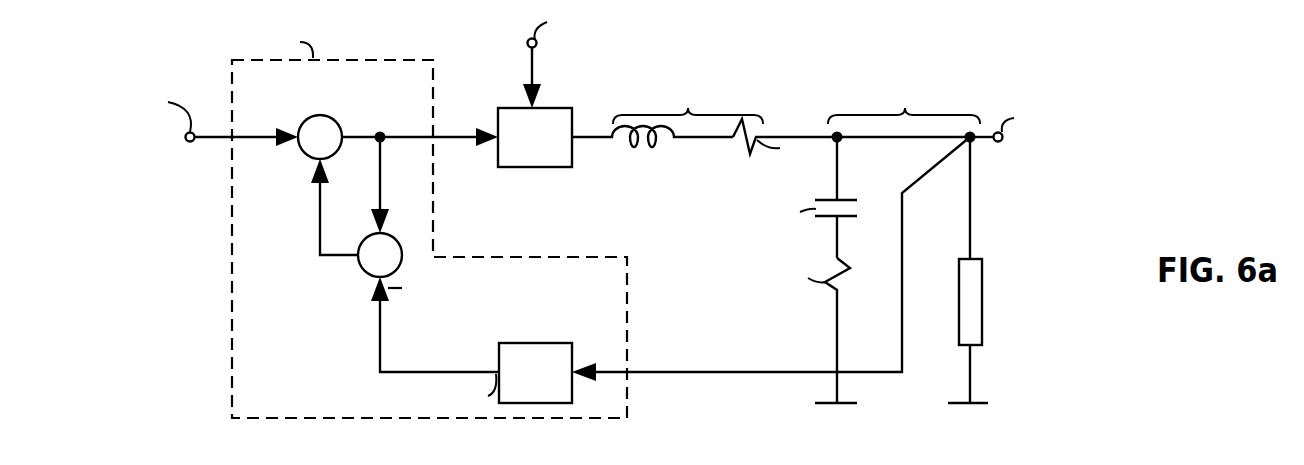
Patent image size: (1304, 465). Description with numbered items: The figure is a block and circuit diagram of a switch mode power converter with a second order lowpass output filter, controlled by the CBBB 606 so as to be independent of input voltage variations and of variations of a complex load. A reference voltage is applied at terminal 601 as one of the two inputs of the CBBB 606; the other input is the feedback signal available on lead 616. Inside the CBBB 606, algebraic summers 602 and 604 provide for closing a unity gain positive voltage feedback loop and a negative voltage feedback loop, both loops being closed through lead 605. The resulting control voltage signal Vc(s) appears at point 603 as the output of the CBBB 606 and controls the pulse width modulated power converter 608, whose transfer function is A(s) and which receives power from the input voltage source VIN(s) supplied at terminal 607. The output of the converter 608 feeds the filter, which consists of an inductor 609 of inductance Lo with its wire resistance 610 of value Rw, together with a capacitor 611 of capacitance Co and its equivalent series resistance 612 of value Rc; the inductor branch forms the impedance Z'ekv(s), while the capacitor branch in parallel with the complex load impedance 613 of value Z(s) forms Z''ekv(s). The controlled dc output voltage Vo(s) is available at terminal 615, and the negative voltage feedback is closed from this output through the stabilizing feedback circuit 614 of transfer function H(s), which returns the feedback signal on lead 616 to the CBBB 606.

The terminal 601 is at (190, 142).
The algebraic summer 602 is at (319, 115).
The point 603 is at (376, 113).
The algebraic summer 604 is at (364, 272).
The lead 605 is at (320, 224).
The CBBB 606 is at (347, 58).
The input voltage terminal V_IN(s) 607 is at (529, 40).
The pulse width modulated power converter 608 is at (543, 168).
The inductor 609 is at (672, 160).
The wire resistance 610 is at (780, 150).
The capacitor 611 is at (846, 200).
The equivalent series resistance 612 is at (851, 262).
The complex load impedance 613 is at (982, 335).
The stabilizing feedback circuit 614 is at (527, 343).
The terminal 615 is at (1002, 141).
The lead 616 is at (440, 370).